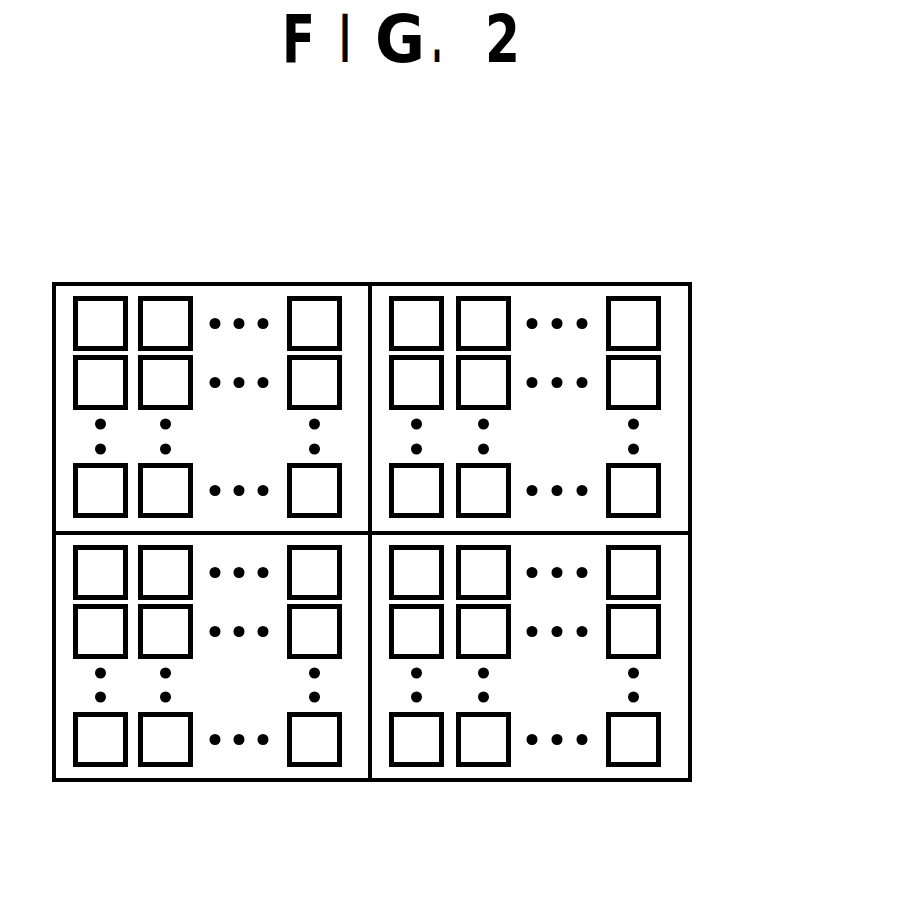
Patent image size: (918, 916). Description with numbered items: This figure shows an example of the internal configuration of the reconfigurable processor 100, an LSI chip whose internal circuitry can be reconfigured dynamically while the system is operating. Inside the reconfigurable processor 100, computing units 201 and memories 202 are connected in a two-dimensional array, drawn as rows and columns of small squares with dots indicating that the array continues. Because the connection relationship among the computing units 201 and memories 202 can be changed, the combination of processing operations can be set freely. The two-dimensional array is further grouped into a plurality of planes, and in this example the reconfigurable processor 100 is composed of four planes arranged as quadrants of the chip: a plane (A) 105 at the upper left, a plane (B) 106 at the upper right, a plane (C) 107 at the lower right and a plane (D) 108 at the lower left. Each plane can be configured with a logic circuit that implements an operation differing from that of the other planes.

The reconfigurable processor 100 is at (345, 284).
The plane (A) 105 is at (205, 302).
The plane (B) 106 is at (604, 347).
The plane (C) 107 is at (543, 772).
The plane (D) 108 is at (215, 772).
The computing unit 201 is at (648, 323).
The memory 202 is at (648, 487).